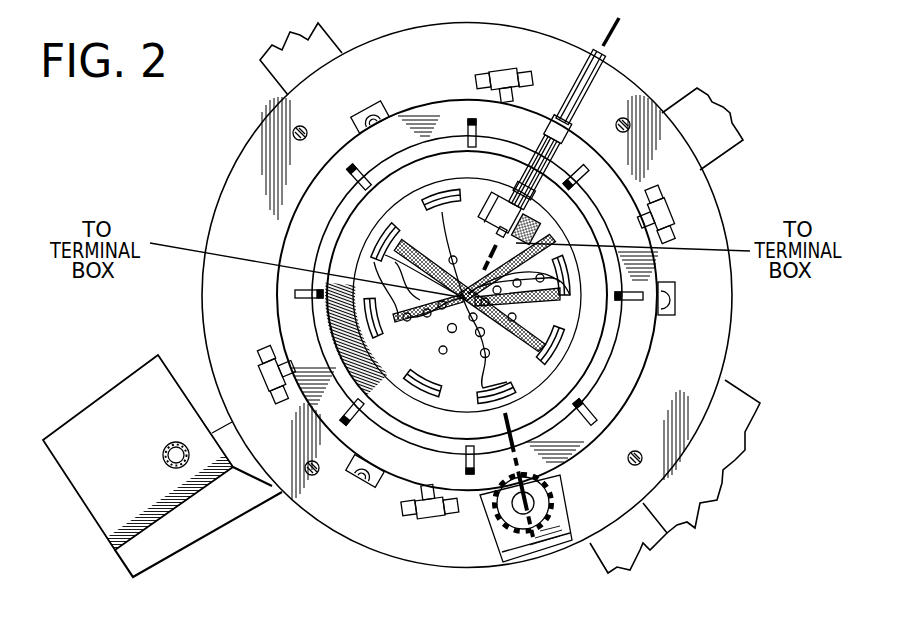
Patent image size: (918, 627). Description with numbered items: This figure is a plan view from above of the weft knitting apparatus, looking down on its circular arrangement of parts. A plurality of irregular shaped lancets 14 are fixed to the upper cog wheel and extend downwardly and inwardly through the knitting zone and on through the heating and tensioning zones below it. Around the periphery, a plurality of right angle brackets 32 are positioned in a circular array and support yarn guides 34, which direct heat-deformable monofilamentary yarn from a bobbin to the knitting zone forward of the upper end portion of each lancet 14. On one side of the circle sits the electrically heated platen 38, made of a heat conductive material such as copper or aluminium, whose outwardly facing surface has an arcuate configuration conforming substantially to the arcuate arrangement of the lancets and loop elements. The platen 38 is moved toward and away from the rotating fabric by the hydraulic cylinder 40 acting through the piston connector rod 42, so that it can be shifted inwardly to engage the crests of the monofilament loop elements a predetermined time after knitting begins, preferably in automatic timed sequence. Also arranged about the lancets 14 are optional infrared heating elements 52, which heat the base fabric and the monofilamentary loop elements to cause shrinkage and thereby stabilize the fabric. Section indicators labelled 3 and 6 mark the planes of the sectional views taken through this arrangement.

The lancets 14 is at (325, 345).
The right angle brackets 32 is at (350, 180).
The yarn guides 34 is at (373, 173).
The electrically heated platen 38 is at (520, 197).
The hydraulic cylinder 40 is at (574, 92).
The piston connector rod 42 is at (541, 190).
The infrared heating elements 52 is at (470, 398).
The section line 3- 3 is at (516, 417).
The section line 6- 6 is at (600, 30).